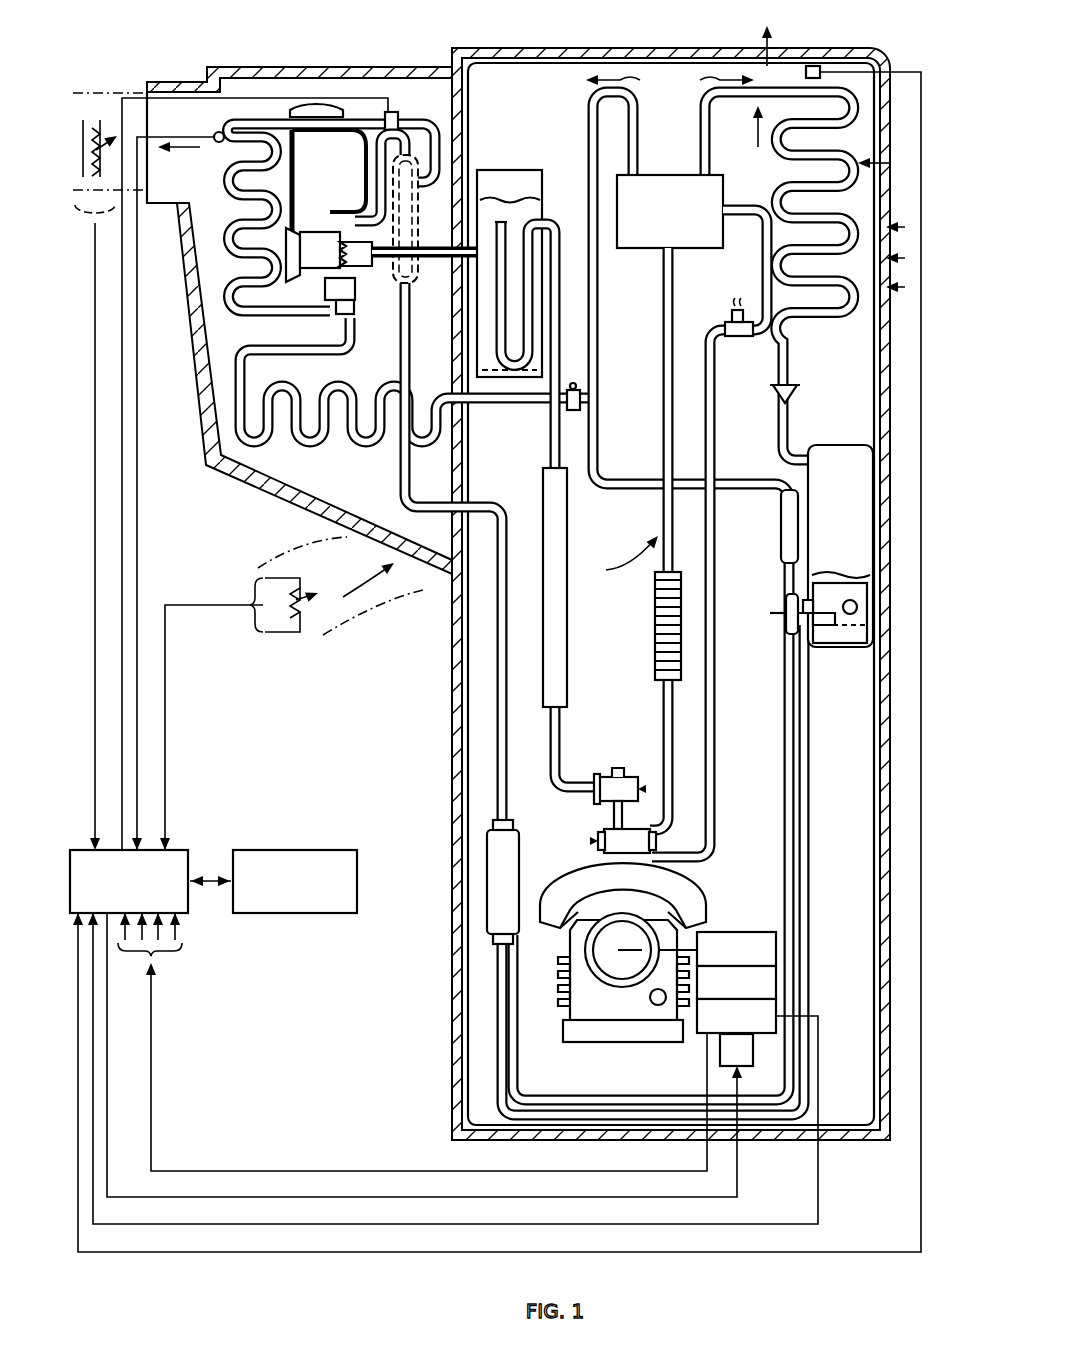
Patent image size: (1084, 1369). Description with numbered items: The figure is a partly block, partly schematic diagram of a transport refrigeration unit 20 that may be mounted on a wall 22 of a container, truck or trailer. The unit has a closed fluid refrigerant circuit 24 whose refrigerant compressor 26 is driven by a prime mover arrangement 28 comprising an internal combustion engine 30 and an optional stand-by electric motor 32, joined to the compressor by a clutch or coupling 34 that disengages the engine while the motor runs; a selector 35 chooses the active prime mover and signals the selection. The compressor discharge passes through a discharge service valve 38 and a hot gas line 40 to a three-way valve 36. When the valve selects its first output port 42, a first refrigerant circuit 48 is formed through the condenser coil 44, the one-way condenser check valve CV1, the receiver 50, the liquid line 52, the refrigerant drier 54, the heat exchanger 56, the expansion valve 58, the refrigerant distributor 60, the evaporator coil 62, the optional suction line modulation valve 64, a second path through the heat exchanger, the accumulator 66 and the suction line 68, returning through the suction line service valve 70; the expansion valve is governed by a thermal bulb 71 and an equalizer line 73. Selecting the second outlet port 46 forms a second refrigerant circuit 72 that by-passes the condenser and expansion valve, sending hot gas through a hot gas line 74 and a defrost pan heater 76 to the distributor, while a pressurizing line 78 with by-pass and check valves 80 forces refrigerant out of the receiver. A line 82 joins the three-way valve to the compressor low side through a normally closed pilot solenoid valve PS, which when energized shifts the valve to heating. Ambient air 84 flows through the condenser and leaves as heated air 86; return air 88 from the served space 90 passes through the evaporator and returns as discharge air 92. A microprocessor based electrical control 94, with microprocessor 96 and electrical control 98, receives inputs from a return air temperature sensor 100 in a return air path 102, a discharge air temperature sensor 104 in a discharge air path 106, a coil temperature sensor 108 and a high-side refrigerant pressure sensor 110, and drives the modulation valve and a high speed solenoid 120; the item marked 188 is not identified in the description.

The transport refrigeration unit 20 is at (416, 1288).
The wall 22 is at (466, 128).
The closed fluid refrigerant circuit 24 is at (620, 560).
The refrigerant compressor 26 is at (609, 966).
The prime mover arrangement 28 is at (461, 1058).
The internal combustion engine 30 is at (682, 1040).
The stand-by electric motor 32 is at (776, 942).
The clutch or coupling 34 is at (776, 975).
The selector 35 is at (776, 1008).
The three-way valve 36 is at (666, 175).
The discharge service valve 38 is at (602, 839).
The hot gas line 40 is at (657, 494).
The first output port 42 is at (709, 175).
The condenser coil 44 is at (838, 271).
The second outlet port 46 is at (598, 176).
The first refrigerant circuit 48 is at (715, 81).
The receiver 50 is at (830, 647).
The liquid line 52 is at (808, 770).
The refrigerant drier 54 is at (487, 864).
The heat exchanger 56 is at (409, 278).
The expansion valve 58 is at (324, 304).
The refrigerant distributor 60 is at (360, 310).
The evaporator coil 62 is at (216, 239).
The controllable suction line modulation valve 64 is at (396, 112).
The accumulator 66 is at (498, 172).
The suction line 68 is at (544, 448).
The suction line service valve 70 is at (612, 772).
The thermal bulb 71 is at (318, 104).
The second refrigerant circuit 72 is at (627, 81).
The equalizer line 73 is at (340, 206).
The hot gas line 74 is at (598, 294).
The defrost pan heater 76 is at (323, 440).
The by-pass or pressurizing line 78 is at (636, 478).
The by-pass and check valves 80 is at (780, 550).
The conduit or line 82 is at (782, 570).
The ambient air 84 is at (885, 166).
The heated air 86 is at (761, 26).
The return air 88 is at (363, 576).
The served space 90 is at (255, 551).
The discharge air 92 is at (190, 148).
The microprocessor based electrical control 94 is at (242, 818).
The microprocessor 96 is at (182, 846).
The electrical control 98 is at (318, 850).
The return air temperature sensor 100 is at (306, 617).
The return air path 102 is at (394, 588).
The discharge air temperature sensor 104 is at (104, 120).
The discharge air path 106 is at (86, 92).
The coil temperature sensor 108 is at (218, 132).
The refrigerant pressure sensor (HPCO) 110 is at (813, 66).
The throttle or high speed solenoid 120 is at (753, 1040).
The service valve 188 is at (585, 411).
The pilot solenoid valve PS is at (722, 316).
The one-way condenser check valve CV1 is at (772, 398).